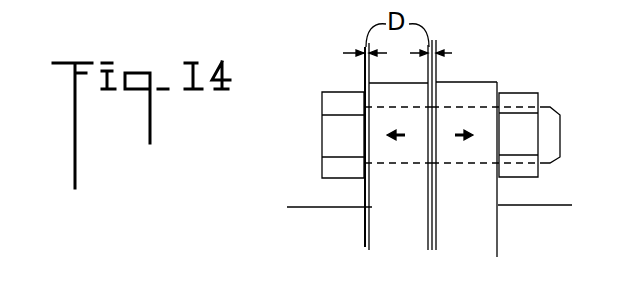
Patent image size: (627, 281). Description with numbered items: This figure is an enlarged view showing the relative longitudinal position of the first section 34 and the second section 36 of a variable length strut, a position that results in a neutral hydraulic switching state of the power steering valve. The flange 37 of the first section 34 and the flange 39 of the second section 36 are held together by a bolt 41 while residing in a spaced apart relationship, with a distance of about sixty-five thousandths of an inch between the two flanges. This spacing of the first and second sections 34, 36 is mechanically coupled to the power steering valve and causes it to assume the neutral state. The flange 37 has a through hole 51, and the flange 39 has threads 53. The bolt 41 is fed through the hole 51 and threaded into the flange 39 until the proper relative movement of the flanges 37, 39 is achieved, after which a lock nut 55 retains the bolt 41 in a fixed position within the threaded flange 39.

The first section 34 is at (305, 205).
The second section 36 is at (550, 203).
The flange 37 is at (386, 93).
The flange 39 is at (478, 97).
The bolt 41 is at (342, 138).
The lock nut 55 is at (528, 100).
The through hole 51 is at (388, 165).
The threads 53 is at (458, 163).